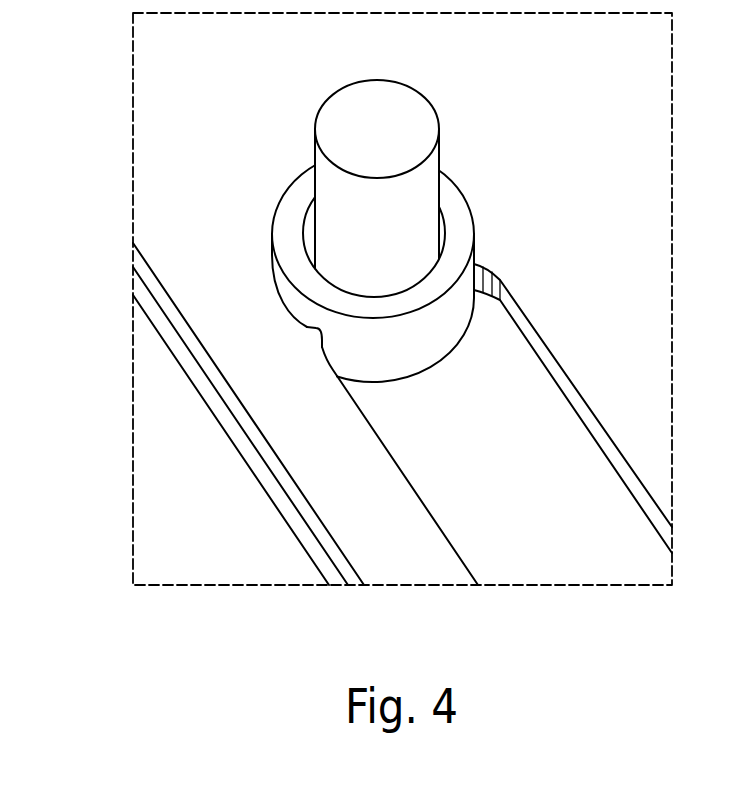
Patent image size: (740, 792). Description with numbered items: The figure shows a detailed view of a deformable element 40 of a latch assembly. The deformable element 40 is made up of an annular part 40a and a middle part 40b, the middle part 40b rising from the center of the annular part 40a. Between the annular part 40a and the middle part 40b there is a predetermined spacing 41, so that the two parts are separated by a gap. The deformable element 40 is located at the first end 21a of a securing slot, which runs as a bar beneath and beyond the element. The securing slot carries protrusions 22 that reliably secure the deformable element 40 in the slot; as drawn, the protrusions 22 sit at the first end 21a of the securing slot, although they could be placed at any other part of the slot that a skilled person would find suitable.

The first end of the securing slot 21a is at (402, 366).
The protrusions 22 is at (310, 338).
The deformable element 40 is at (315, 321).
The annular part 40a is at (350, 363).
The middle part 40b is at (332, 189).
The predetermined spacing 41 is at (450, 246).